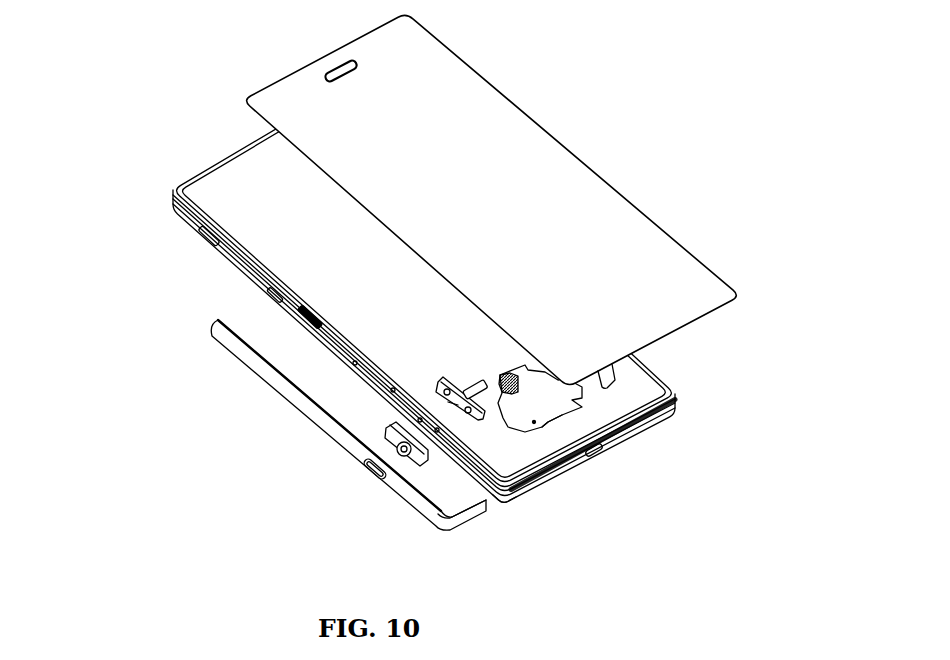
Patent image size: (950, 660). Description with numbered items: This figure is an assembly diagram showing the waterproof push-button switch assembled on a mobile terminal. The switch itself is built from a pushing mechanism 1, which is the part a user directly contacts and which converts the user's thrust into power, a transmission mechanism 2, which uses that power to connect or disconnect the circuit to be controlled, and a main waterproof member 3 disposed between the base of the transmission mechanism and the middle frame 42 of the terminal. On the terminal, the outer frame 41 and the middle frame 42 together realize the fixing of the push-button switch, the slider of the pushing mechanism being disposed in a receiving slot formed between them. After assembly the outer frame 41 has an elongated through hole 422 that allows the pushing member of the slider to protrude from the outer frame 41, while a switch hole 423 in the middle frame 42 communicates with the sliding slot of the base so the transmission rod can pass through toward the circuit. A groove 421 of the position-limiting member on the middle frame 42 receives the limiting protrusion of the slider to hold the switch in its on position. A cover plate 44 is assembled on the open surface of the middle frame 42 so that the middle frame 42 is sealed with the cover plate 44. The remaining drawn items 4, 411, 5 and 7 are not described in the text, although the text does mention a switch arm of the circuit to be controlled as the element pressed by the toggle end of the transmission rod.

The pushing mechanism 1 is at (392, 440).
The transmission mechanism 2 is at (500, 421).
The main waterproof member 3 is at (472, 414).
The housing assembly 4 is at (82, 370).
The outer frame 41 is at (237, 350).
The middle frame 42 is at (375, 382).
The cover plate 44 is at (372, 168).
The button 411 is at (370, 465).
The groove 421 is at (390, 425).
The elongated through hole 422 is at (407, 452).
The switch hole 423 is at (515, 500).
The connector 5 is at (513, 383).
The flexible circuit board 7 is at (547, 412).